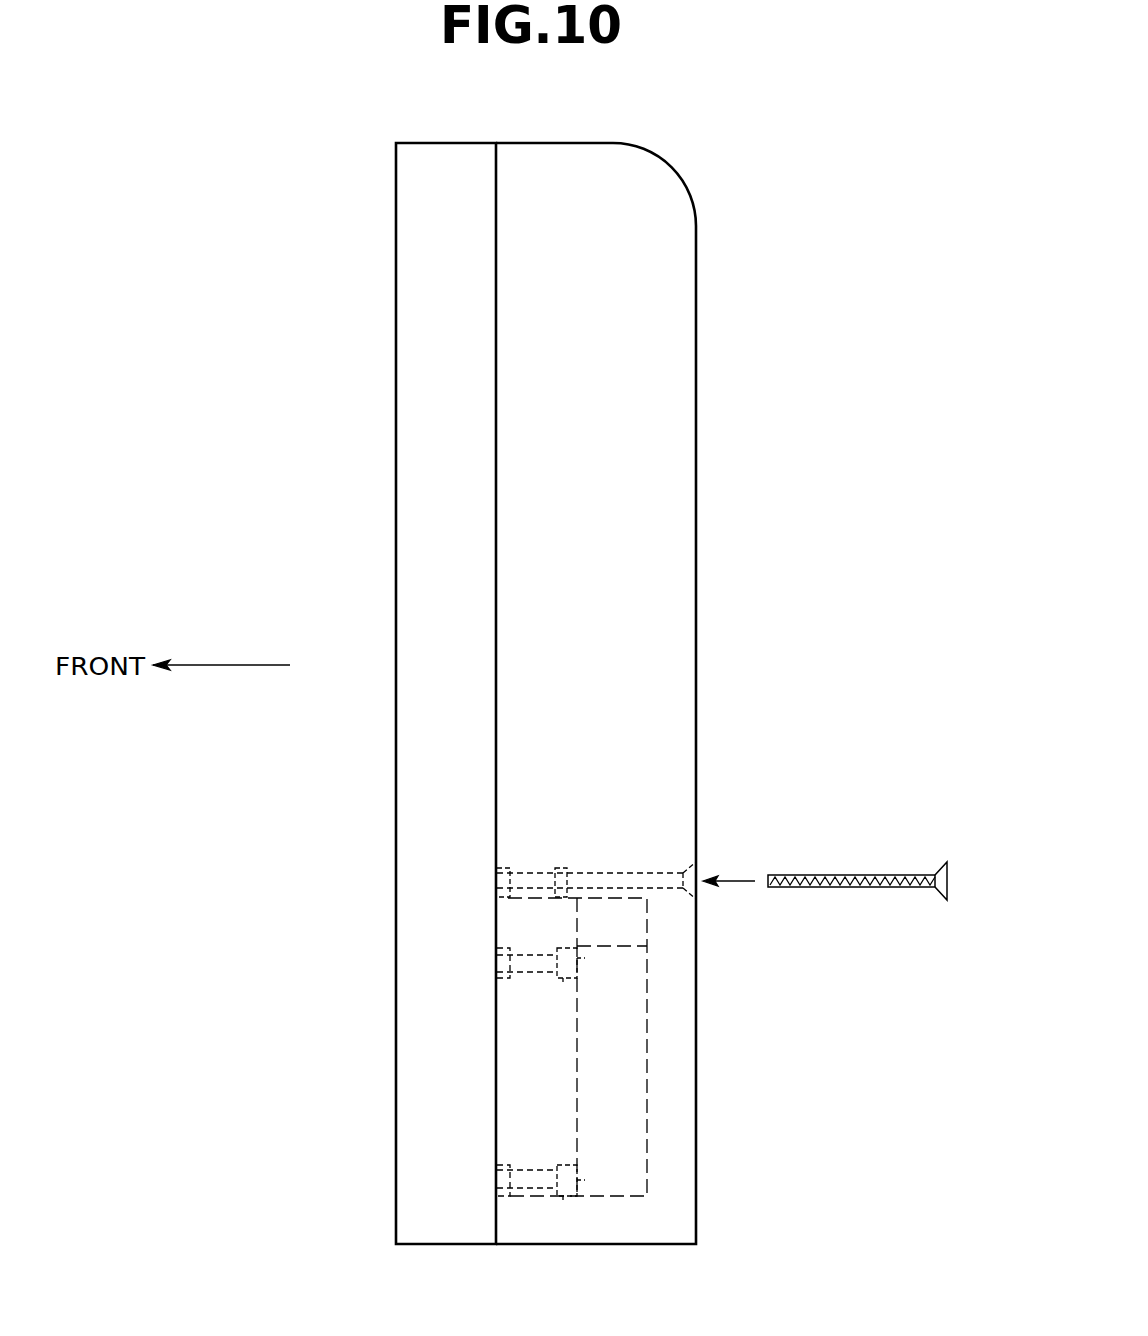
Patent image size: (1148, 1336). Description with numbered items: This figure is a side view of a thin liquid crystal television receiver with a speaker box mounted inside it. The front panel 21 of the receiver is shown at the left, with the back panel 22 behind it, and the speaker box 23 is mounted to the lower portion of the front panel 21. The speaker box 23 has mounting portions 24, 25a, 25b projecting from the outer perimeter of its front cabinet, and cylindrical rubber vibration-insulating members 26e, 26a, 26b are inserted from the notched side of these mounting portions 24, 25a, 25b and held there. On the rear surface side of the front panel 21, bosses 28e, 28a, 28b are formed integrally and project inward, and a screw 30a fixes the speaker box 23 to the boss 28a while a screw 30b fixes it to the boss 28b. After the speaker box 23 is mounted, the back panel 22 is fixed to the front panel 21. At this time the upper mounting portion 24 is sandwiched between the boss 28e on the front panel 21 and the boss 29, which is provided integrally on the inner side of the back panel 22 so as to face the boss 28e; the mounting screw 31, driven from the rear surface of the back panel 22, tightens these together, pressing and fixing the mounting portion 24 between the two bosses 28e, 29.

The front panel 21 is at (415, 240).
The back panel 22 is at (665, 290).
The speaker box 23 is at (633, 1070).
The mounting portion 24 is at (570, 868).
The mounting portion 25a is at (563, 980).
The mounting portion 25b is at (563, 1198).
The vibration-insulating member 26a is at (555, 948).
The vibration-insulating member 26b is at (555, 1165).
The vibration-insulating member 26e is at (553, 868).
The boss 28a is at (520, 978).
The boss 28b is at (528, 1170).
The boss 28e is at (528, 872).
The boss 29 is at (658, 870).
The screw 30a is at (577, 965).
The screw 30b is at (577, 1178).
The screw 31 is at (920, 875).